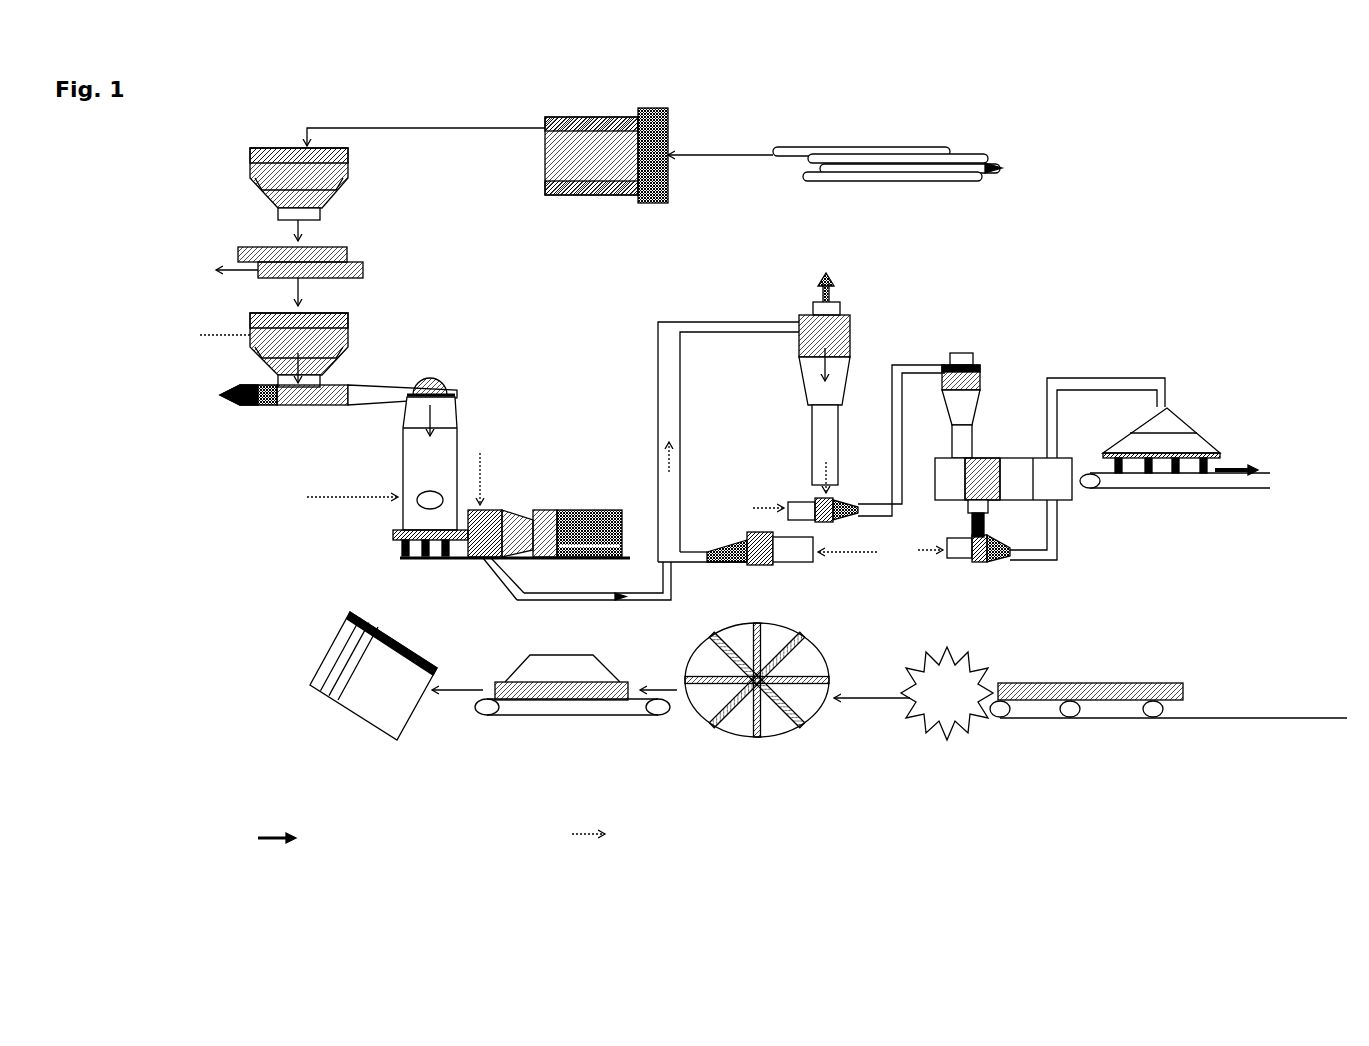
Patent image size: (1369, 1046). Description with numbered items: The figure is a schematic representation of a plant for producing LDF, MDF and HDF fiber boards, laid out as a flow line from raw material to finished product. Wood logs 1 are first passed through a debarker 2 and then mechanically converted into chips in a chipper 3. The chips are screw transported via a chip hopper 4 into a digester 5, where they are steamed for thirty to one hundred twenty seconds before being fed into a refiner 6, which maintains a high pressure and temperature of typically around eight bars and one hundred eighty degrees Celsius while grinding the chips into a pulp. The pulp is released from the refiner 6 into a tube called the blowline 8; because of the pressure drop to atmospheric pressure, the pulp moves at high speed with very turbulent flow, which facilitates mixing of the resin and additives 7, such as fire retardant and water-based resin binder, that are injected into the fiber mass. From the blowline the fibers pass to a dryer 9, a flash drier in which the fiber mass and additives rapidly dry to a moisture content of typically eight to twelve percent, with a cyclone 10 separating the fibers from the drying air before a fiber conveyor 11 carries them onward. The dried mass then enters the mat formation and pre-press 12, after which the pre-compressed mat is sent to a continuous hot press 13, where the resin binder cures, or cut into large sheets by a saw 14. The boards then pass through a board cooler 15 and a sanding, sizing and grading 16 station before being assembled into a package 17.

The wood logs 1 is at (835, 185).
The debarker 2 is at (606, 174).
The chipper 3 is at (397, 184).
The chip hopper 4 is at (310, 276).
The digester 5 is at (468, 440).
The refiner 6 is at (545, 505).
The resin and additives 7 is at (486, 580).
The blowline 8 is at (594, 600).
The dryer 9 is at (801, 424).
The cyclone 10 is at (824, 367).
The fiber conveyor 11 is at (1094, 433).
The mat formation and pre-press 12 is at (1282, 643).
The continuous hot press 13 is at (1168, 732).
The saw 14 is at (913, 714).
The board cooler 15 is at (734, 702).
The sanding, sizing and grading 16 is at (490, 697).
The package 17 is at (315, 838).